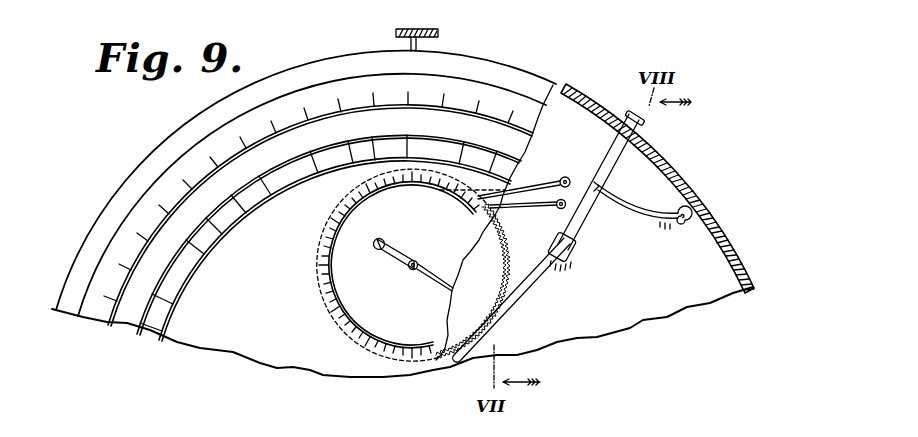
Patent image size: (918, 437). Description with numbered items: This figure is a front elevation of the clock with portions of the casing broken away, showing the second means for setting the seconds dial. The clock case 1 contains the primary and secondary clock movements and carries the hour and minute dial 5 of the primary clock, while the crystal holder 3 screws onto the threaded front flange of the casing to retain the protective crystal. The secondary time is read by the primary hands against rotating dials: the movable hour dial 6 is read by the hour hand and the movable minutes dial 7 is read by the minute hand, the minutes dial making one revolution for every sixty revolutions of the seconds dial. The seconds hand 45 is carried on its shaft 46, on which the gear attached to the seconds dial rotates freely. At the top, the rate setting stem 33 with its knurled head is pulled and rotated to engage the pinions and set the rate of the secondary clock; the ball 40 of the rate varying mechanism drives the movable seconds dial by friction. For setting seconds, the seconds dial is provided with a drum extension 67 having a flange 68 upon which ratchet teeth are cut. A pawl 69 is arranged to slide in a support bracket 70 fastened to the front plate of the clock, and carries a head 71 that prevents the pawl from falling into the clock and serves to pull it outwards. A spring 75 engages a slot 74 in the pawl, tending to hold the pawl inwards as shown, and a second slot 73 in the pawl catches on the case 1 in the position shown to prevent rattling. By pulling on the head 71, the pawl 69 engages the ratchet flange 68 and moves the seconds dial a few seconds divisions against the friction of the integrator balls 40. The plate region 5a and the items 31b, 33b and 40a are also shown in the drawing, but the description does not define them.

The clock case 1 is at (675, 191).
The crystal holder 3 is at (265, 95).
The hour and minute dial 5 is at (292, 107).
The dial plate 5a is at (402, 332).
The movable hour dial 6 is at (317, 122).
The movable minutes dial 7 is at (360, 146).
The knob stem 31b is at (434, 34).
The rate setting stem 33 is at (463, 26).
The knob cap 33b is at (412, 29).
The ball 40 is at (333, 304).
The pointer hand 40a is at (451, 104).
The seconds hand 45 is at (430, 280).
The shaft 46 is at (409, 155).
The drum extension 67 is at (492, 265).
The flange 68 is at (497, 273).
The pawl 69 is at (527, 293).
The support bracket 70 is at (578, 253).
The head 71 is at (646, 121).
The slot 73 is at (668, 150).
The slot 74 is at (600, 192).
The spring 75 is at (737, 293).